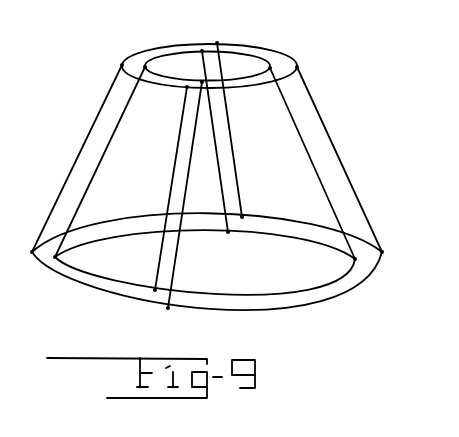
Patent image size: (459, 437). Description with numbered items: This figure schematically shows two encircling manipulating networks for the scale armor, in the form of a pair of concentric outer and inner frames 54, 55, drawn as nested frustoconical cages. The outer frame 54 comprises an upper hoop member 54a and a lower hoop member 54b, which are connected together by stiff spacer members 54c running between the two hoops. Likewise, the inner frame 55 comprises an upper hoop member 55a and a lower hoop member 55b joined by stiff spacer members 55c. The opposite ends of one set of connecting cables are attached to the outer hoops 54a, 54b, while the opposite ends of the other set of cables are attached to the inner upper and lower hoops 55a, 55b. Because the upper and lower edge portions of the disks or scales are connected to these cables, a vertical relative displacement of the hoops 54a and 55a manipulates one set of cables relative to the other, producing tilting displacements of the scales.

The outer frame 54 is at (211, 168).
The upper hoop member 54a is at (150, 50).
The lower hoop member 54b is at (78, 277).
The spacer member 54c is at (80, 153).
The inner frame 55 is at (205, 175).
The upper hoop member 55a is at (184, 56).
The lower hoop member 55b is at (116, 297).
The spacer member 55c is at (104, 156).